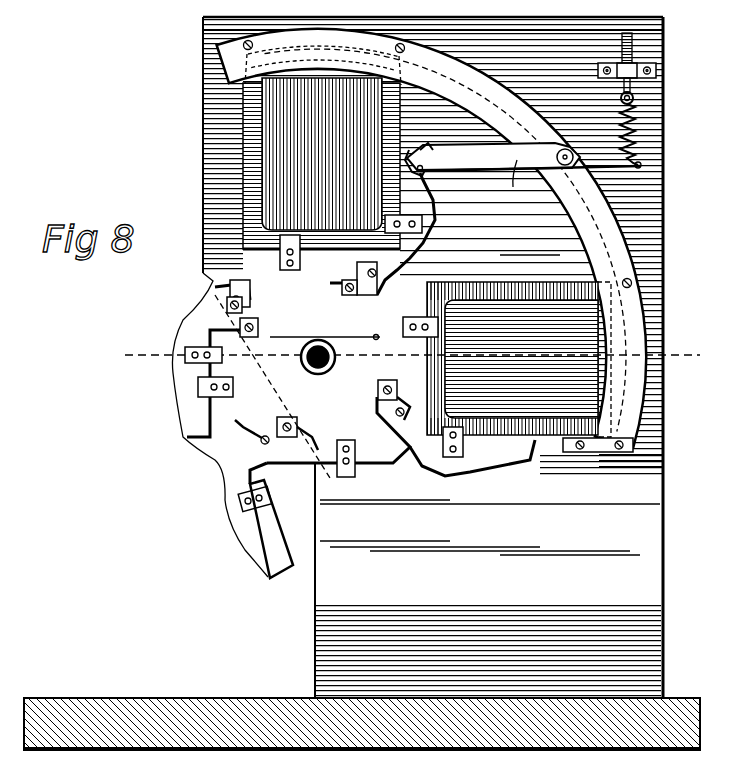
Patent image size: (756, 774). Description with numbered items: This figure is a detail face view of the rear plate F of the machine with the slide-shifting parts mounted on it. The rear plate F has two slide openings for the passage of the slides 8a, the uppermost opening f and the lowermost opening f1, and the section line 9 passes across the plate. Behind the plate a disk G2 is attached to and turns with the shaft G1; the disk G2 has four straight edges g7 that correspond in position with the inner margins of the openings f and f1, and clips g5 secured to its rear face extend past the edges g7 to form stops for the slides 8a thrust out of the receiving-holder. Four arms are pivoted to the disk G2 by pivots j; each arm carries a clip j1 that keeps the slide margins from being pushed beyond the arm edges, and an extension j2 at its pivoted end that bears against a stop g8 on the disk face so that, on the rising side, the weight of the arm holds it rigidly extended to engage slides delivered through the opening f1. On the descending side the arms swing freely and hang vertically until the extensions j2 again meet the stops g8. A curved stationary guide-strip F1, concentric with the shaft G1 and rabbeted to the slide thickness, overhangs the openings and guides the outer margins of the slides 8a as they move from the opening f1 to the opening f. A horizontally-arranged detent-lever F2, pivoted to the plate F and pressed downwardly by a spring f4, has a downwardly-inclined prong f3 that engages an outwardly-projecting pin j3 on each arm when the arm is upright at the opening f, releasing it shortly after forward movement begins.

The rear plate F is at (362, 383).
The curved stationary guide-strip F1 is at (600, 230).
The detent-lever F2 is at (524, 180).
The uppermost slide opening f is at (415, 147).
The lowermost slide opening f1 is at (526, 269).
The inclined prong f3 is at (437, 135).
The spring f4 is at (620, 117).
The electromagnet 8a is at (420, 256).
The section line 9 is at (408, 352).
The shaft G1 is at (325, 328).
The disk G2 is at (329, 343).
The pivot j is at (355, 338).
The clip j1 is at (425, 222).
The extension j2 is at (312, 356).
The outwardly-projecting pin j3 is at (240, 568).
The clip g5 is at (160, 410).
The straight edge g7 is at (190, 292).
The stop g8 is at (316, 377).